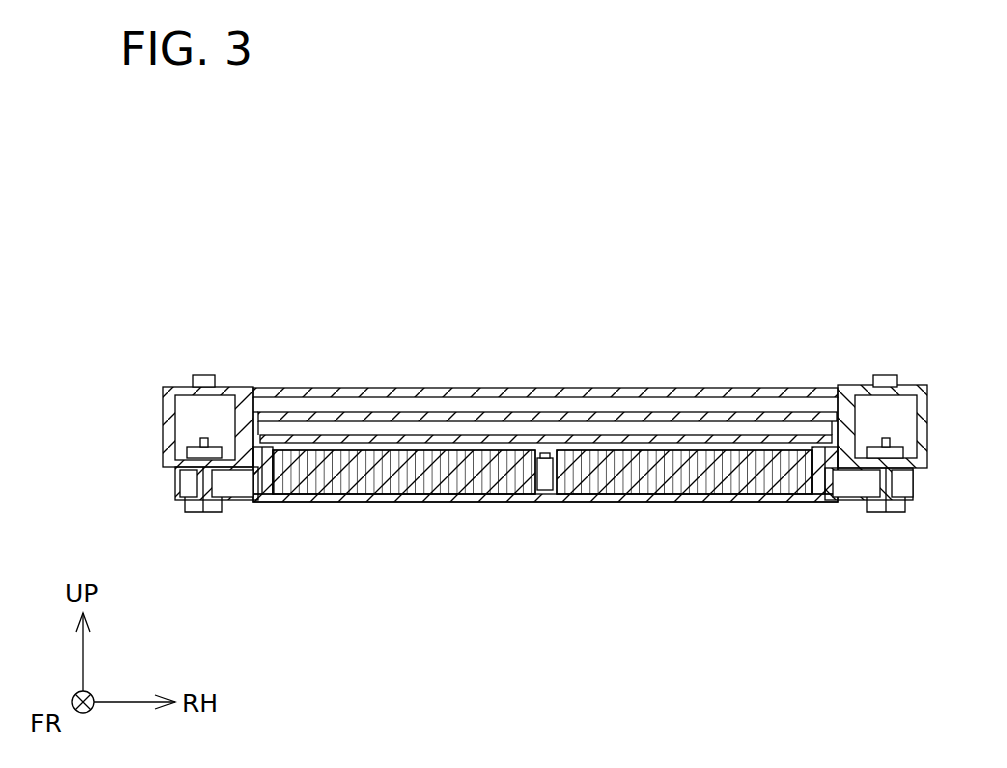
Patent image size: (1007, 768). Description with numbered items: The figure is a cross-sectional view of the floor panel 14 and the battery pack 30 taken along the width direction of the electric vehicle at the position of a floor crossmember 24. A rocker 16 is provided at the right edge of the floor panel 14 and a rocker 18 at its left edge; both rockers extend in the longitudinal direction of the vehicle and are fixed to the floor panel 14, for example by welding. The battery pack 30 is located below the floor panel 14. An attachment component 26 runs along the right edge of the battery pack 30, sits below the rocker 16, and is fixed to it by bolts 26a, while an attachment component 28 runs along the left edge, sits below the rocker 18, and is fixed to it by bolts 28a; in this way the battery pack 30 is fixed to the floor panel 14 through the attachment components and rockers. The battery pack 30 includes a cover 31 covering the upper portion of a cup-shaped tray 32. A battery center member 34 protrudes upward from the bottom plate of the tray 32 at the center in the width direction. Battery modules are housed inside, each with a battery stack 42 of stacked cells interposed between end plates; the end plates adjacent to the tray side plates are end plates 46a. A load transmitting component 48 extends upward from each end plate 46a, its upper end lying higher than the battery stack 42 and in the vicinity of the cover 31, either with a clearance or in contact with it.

The floor panel 14 is at (460, 418).
The rocker 16 is at (870, 385).
The rocker 18 is at (222, 387).
The floor crossmember 24 is at (665, 390).
The attachment component 26 is at (845, 500).
The bolts 26a is at (890, 512).
The attachment component 28 is at (243, 500).
The bolts 28a is at (200, 510).
The battery pack 30 is at (542, 522).
The cover 31 is at (358, 440).
The tray 32 is at (470, 502).
The battery center member 34 is at (545, 455).
The battery stack 42 is at (388, 480).
The end plates 46a is at (297, 502).
The load transmitting component 48 is at (272, 447).